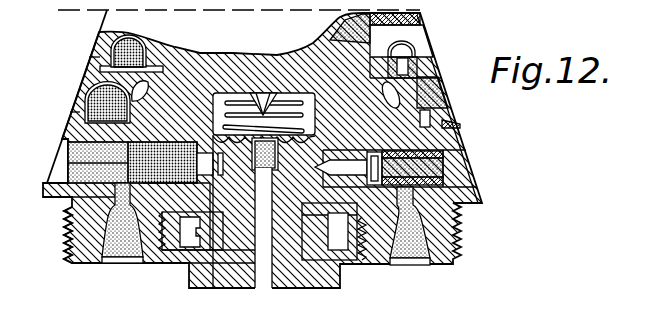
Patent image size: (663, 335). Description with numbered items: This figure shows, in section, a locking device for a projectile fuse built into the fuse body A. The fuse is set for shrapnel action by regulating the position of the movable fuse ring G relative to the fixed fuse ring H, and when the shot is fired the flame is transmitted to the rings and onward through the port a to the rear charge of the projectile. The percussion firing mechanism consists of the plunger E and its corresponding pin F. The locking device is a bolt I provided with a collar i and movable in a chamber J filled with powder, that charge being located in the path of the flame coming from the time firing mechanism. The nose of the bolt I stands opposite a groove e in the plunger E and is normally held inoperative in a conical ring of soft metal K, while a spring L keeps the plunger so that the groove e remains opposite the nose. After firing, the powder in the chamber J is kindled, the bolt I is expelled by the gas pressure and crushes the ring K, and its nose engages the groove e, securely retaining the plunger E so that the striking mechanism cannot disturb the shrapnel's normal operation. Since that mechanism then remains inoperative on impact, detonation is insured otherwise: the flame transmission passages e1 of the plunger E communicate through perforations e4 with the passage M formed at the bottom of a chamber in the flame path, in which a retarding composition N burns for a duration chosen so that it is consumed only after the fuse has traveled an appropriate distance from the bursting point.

The fuse body A is at (72, 128).
The fixed fuse ring H is at (100, 33).
The movable fuse ring G is at (84, 85).
The retarding composition N is at (68, 163).
The passage M is at (118, 190).
The port a is at (70, 249).
The perforations e4 is at (140, 262).
The plunger E is at (188, 276).
The spring L is at (235, 107).
The pin F is at (263, 93).
The conical ring of soft metal K is at (332, 123).
The bolt I is at (453, 122).
The collar i is at (367, 165).
The chamber J is at (468, 160).
The groove e is at (366, 250).
The flame transmission passages e1 is at (312, 277).